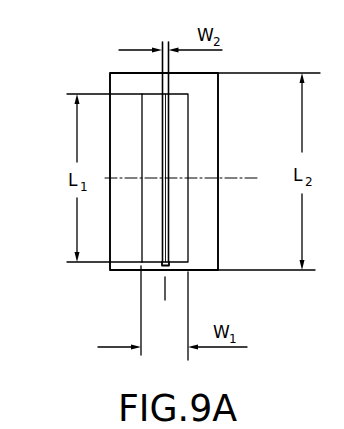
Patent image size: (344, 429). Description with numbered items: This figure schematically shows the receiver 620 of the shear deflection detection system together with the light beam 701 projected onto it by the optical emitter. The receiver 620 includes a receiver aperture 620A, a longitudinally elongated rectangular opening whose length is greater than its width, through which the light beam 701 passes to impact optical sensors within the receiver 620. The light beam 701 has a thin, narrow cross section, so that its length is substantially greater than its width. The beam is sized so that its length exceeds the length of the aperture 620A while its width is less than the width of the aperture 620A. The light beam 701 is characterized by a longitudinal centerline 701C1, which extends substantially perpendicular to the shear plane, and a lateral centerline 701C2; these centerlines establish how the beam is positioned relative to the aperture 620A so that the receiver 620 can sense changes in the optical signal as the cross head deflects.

The light beam 701 is at (170, 114).
The longitudinal centerline of the light beam 701C1 is at (249, 178).
The lateral centerline of the light beam 701C2 is at (165, 295).
The receiver 620 is at (124, 273).
The receiver aperture 620A is at (155, 270).